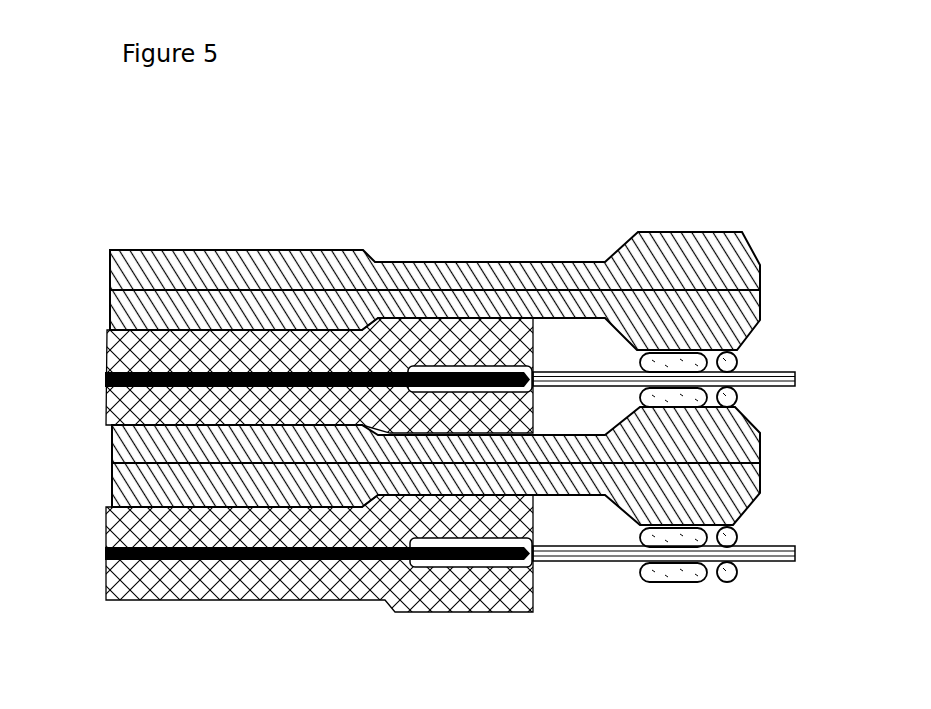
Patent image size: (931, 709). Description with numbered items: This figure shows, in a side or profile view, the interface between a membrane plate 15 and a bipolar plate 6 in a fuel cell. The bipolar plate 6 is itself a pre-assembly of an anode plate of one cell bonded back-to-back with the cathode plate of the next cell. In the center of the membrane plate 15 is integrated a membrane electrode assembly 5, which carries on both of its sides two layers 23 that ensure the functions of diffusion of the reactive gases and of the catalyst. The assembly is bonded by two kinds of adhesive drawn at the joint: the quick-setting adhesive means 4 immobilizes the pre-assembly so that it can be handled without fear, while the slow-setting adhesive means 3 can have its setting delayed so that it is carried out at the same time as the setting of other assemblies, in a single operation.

The slow-setting adhesive means 3 is at (675, 400).
The quick-setting adhesive means 4 is at (724, 403).
The membrane electrode assembly 5 is at (108, 343).
The bipolar plate 6 is at (110, 470).
The membrane plate 15 is at (780, 372).
The layers 23 is at (500, 343).